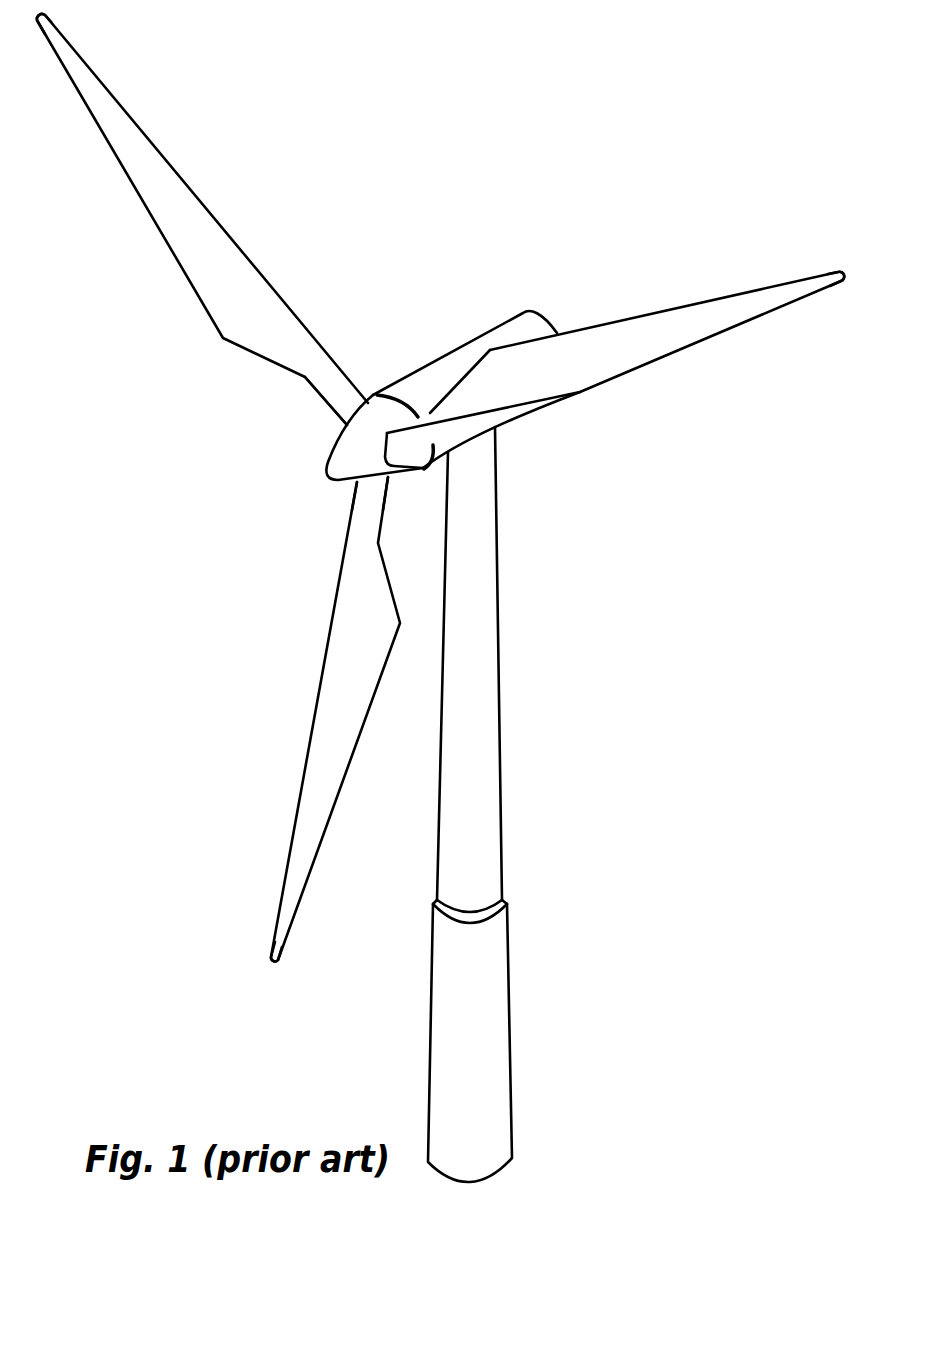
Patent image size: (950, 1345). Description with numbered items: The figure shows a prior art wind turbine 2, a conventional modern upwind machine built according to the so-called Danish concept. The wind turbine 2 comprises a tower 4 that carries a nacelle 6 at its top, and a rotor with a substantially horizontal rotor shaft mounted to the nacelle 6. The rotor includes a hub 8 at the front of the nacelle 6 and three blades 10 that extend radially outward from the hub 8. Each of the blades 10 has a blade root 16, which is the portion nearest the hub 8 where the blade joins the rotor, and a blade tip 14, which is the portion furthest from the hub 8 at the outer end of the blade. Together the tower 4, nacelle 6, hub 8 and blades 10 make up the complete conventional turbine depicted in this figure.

The wind turbine 2 is at (440, 598).
The tower 4 is at (487, 667).
The nacelle 6 is at (435, 375).
The hub 8 is at (345, 458).
The blades 10 is at (235, 310).
The blade tip 14 is at (80, 73).
The blade root 16 is at (350, 413).